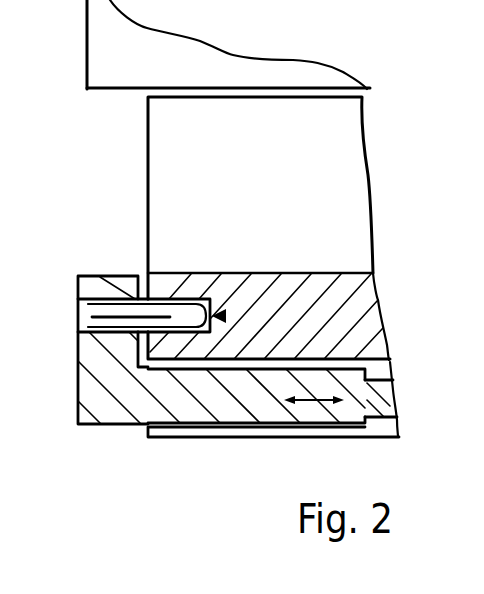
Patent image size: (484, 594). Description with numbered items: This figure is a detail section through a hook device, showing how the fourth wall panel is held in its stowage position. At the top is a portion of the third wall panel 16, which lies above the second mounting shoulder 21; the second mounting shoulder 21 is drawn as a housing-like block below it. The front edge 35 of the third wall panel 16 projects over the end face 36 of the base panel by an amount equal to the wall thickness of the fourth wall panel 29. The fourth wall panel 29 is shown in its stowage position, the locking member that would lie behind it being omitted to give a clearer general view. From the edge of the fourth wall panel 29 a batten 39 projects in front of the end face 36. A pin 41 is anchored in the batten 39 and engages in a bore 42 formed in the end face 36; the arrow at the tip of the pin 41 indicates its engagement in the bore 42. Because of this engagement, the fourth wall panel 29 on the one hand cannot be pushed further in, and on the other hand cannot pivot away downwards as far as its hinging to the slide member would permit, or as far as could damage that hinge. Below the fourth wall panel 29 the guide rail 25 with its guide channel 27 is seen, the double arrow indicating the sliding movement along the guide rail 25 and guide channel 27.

The third wall panel 16 is at (236, 73).
The front edge 35 is at (86, 63).
The second mounting shoulder 21 is at (340, 173).
The end face 36 is at (157, 282).
The pin 41 is at (104, 315).
The bore 42 is at (226, 316).
The batten 39 is at (86, 340).
The fourth wall panel 29 is at (218, 397).
The guide channel 27 is at (380, 398).
The guide rail 25 is at (382, 428).